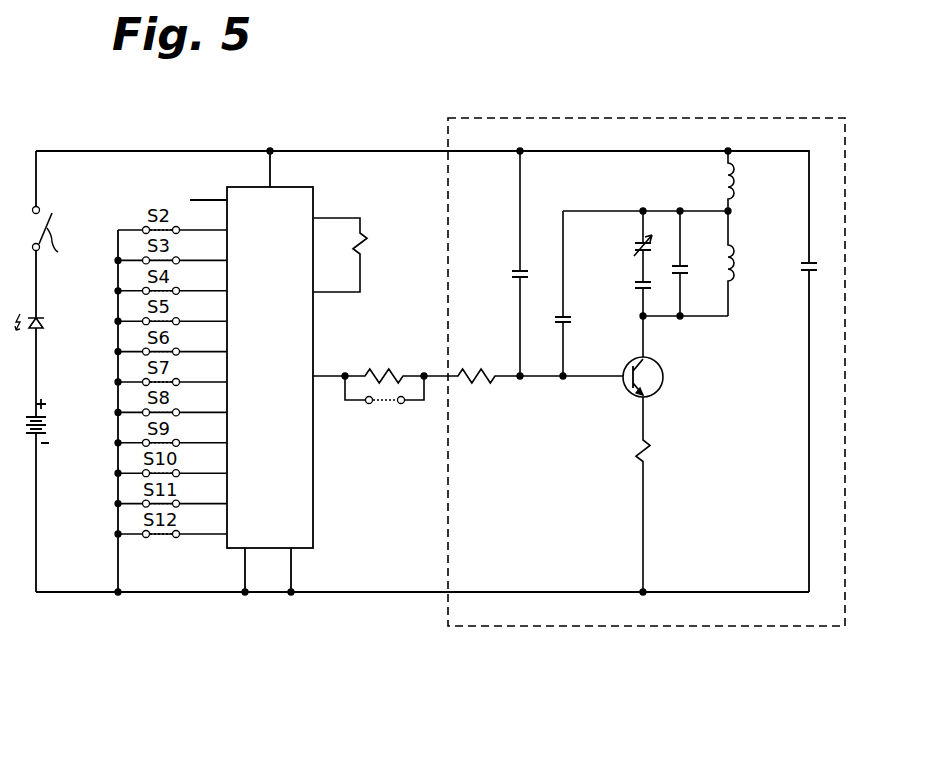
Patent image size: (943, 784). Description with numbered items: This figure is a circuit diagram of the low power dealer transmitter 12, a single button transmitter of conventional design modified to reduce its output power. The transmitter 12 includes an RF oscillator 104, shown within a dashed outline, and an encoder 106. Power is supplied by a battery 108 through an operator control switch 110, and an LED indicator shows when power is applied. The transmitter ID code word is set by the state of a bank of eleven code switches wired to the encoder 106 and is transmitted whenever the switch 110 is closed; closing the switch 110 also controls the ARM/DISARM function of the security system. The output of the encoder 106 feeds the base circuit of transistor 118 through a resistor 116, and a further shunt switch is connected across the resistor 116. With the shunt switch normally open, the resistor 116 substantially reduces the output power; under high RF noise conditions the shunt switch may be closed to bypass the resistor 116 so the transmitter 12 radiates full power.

The dealer transmitter 12 is at (281, 614).
The RF oscillator 104 is at (692, 118).
The encoder 106 is at (303, 501).
The battery 108 is at (37, 436).
The operator control switch 110 is at (64, 243).
The resistor 116 is at (380, 370).
The transistor 118 is at (656, 392).